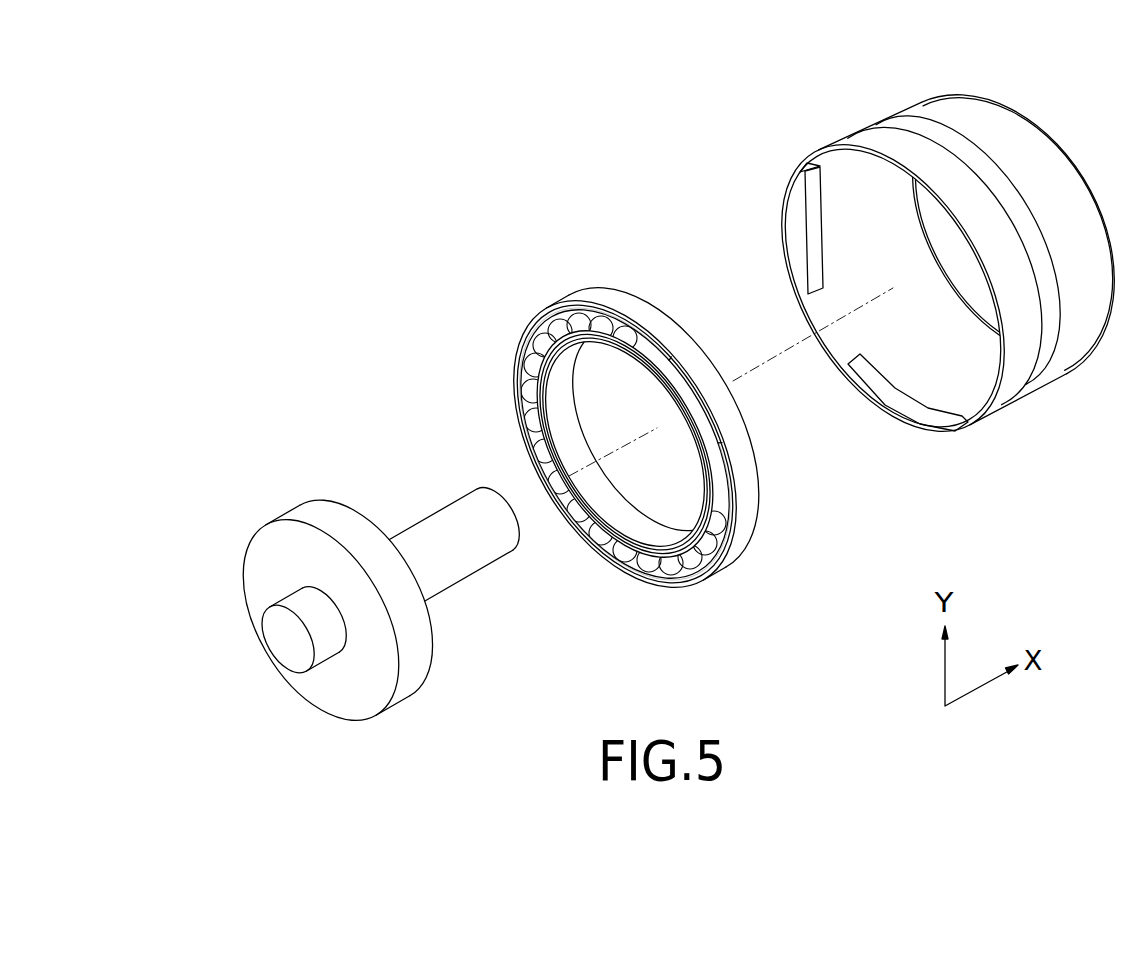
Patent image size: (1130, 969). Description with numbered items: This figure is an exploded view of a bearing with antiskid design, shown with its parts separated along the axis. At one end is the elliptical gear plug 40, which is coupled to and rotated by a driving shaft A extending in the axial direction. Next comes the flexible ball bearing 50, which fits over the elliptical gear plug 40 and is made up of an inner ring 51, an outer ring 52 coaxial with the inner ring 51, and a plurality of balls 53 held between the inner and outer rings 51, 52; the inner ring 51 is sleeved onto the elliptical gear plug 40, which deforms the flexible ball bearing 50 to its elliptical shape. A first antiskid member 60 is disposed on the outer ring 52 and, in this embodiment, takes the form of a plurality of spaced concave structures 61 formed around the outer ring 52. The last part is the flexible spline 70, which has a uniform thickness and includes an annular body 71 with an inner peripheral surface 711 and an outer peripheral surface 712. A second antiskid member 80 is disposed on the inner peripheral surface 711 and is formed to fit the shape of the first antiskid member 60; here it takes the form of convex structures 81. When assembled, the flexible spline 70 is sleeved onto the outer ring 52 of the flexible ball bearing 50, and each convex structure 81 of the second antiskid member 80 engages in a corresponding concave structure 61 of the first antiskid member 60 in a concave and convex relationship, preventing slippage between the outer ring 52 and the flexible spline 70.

The elliptical gear plug 40 is at (355, 576).
The driving shaft A is at (428, 503).
The flexible ball bearing 50 is at (625, 474).
The inner ring 51 is at (637, 530).
The outer ring 52 is at (684, 570).
The balls 53 is at (657, 563).
The first antiskid member 60 is at (647, 426).
The concave structure 61 is at (678, 358).
The flexible spline 70 is at (904, 258).
The annular body 71 is at (954, 376).
The inner peripheral surface 711 is at (821, 168).
The outer peripheral surface 712 is at (828, 206).
The second antiskid member 80 is at (886, 336).
The convex structure 81 is at (813, 292).